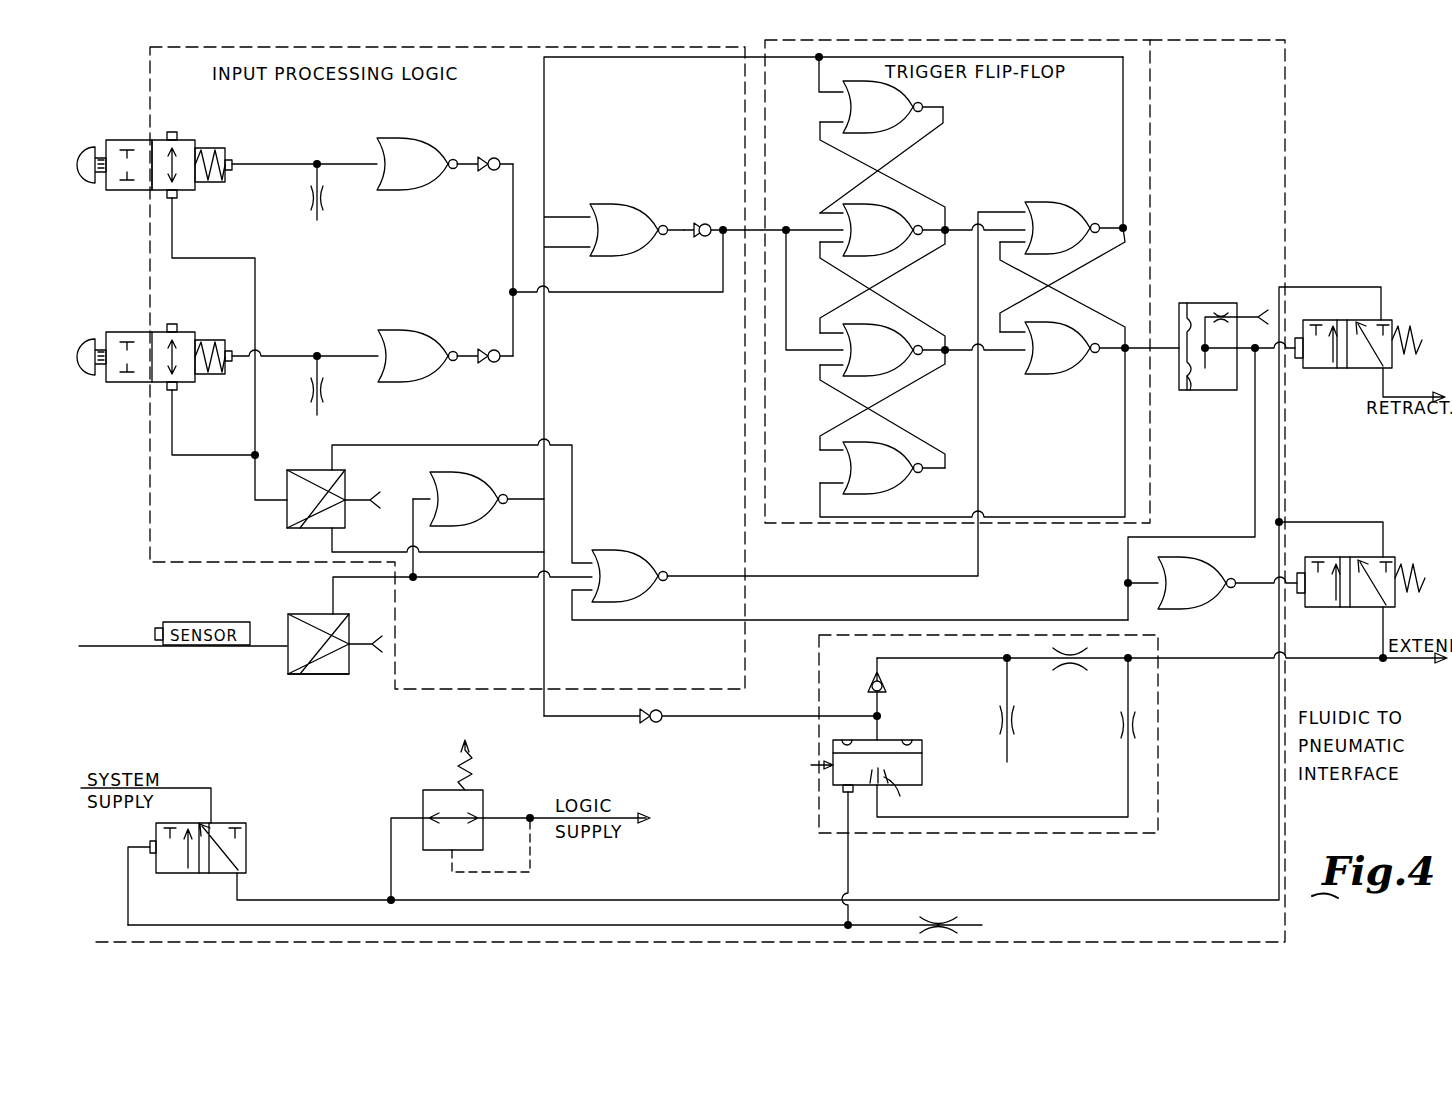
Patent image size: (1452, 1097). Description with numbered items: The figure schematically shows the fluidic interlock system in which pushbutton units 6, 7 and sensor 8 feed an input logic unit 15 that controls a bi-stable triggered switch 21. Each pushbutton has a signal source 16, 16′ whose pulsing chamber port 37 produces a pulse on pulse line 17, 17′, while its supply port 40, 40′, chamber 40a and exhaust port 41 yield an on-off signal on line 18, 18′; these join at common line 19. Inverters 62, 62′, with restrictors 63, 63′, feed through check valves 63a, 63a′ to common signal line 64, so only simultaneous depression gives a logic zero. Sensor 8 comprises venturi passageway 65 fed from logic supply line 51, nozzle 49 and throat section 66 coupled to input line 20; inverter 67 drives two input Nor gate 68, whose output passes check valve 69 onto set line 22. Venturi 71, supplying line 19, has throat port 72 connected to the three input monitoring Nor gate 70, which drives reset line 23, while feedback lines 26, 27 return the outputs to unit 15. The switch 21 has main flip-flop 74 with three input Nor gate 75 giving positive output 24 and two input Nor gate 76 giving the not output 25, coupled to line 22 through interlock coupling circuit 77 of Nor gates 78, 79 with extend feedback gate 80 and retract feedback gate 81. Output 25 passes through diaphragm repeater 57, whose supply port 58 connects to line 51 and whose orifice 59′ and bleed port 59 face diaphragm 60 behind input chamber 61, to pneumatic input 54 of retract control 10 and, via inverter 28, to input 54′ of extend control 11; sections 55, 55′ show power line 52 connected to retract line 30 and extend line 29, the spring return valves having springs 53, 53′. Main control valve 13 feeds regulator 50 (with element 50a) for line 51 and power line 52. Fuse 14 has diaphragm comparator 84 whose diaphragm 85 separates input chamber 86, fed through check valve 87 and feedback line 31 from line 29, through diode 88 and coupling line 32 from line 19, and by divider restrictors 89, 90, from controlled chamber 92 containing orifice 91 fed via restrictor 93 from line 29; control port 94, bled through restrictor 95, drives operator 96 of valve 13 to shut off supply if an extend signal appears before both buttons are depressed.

The pushbutton unit 6 is at (104, 314).
The pushbutton unit 7 is at (90, 188).
The sensor 8 is at (168, 610).
The retract control 10 is at (1364, 388).
The extend control 11 is at (1368, 622).
The main control valve 13 is at (248, 832).
The fluidic fuse 14 is at (1005, 836).
The input logic unit 15 is at (445, 700).
The fluidic signal source 16 is at (214, 304).
The pulse generator 16′ is at (208, 120).
The pulse line 17 is at (280, 346).
The pulse line 17′ is at (276, 162).
The on-off signal line 18 is at (236, 458).
The on-off signal line 18′ is at (256, 276).
The common line 19 is at (284, 504).
The input line 20 is at (333, 588).
The bi-stable triggered switch 21 is at (1152, 120).
The set signal line 22 is at (768, 226).
The reset line 23 is at (688, 576).
The positive output 24 is at (1124, 174).
The not output 25 is at (1130, 346).
The feedback line 26 is at (684, 62).
The feedback line 27 is at (816, 630).
The fluidic logic inverter 28 is at (1196, 606).
The extend output line 29 is at (1386, 662).
The retract output line 30 is at (1392, 398).
The feedback line 31 is at (1202, 664).
The coupling line 32 is at (806, 708).
The output port 37 is at (226, 158).
The fluid supply port 40 is at (178, 390).
The fluid supply port 40′ is at (178, 195).
The chamber 40a is at (160, 190).
The exhaust port 41 is at (174, 322).
The nozzle 49 is at (154, 634).
The logic supply regulator 50 is at (420, 796).
The regulator adjustment spring 50a is at (474, 772).
The logic supply line 51 is at (376, 496).
The power system line 52 is at (1360, 292).
The valve spring 53 is at (1390, 322).
The valve spring 53′ is at (1390, 560).
The pneumatic input unit 54 is at (1296, 360).
The pneumatic input unit 54′ is at (1298, 574).
The valve section 55 is at (1330, 322).
The valve section 55′ is at (1322, 606).
The diaphragm fluidic repeater 57 is at (1233, 402).
The supply port 58 is at (1244, 328).
The bleed orifice 59 is at (1205, 360).
The orifice 59′ is at (1220, 312).
The diaphragm 60 is at (1196, 390).
The input chamber 61 is at (1192, 304).
The inverter 62 is at (420, 336).
The inverter 62′ is at (440, 186).
The restricter 63 is at (326, 388).
The flow restrictor 63′ is at (326, 200).
The check valve 63a is at (494, 346).
The check valve 63a′ is at (494, 176).
The common signal line 64 is at (630, 294).
The venturi passageway 65 is at (290, 666).
The throat section 66 is at (318, 644).
The logic inverter 67 is at (474, 486).
The two input Nor gate 68 is at (634, 212).
The check valve 69 is at (700, 222).
The pushbutton position monitoring Nor gate 70 is at (636, 552).
The venturi 71 is at (328, 466).
The throat section port 72 is at (316, 499).
The main flip-flop 74 is at (1106, 301).
The three input Nor gate 75 is at (1076, 202).
The two input Nor gate 76 is at (1066, 372).
The interlock signal coupling gate circuit 77 is at (936, 301).
The three input Nor gate 78 is at (878, 210).
The three input Nor gate 79 is at (878, 330).
The extend feedback Nor gate 80 is at (910, 98).
The retract feedback gate 81 is at (888, 450).
The diaphragm comparator 84 is at (807, 769).
The diaphragm 85 is at (884, 748).
The input chamber 86 is at (924, 748).
The check valve 87 is at (888, 680).
The diode 88 is at (660, 724).
The pressure dividing restrictor 89 is at (1058, 664).
The pressure dividing restrictor 90 is at (1018, 722).
The orifice 91 is at (902, 794).
The controlled chamber 92 is at (922, 776).
The restrictor 93 is at (1120, 722).
The control port 94 is at (840, 790).
The restrictor 95 is at (950, 914).
The operator 96 is at (148, 856).